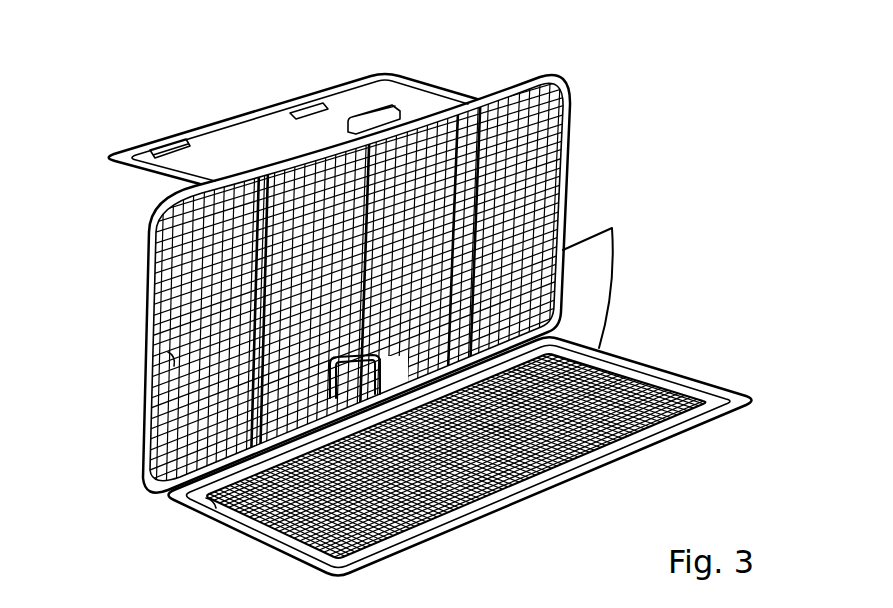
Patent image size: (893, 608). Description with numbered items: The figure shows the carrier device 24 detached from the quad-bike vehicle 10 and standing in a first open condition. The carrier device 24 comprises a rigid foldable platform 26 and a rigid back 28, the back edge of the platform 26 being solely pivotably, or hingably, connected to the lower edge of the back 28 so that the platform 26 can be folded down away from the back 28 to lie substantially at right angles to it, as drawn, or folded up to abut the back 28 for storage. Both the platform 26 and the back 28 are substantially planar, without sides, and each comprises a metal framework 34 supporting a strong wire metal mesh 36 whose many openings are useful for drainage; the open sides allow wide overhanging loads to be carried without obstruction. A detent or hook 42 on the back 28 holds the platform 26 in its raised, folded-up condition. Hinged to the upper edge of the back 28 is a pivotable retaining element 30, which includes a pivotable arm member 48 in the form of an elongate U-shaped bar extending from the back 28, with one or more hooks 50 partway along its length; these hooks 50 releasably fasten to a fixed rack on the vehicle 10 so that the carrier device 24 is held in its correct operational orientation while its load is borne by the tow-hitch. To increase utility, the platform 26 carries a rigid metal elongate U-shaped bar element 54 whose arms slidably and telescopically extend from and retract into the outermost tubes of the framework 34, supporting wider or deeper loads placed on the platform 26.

The quad-bike vehicle 10 is at (417, 305).
The carrier device 24 is at (464, 403).
The platform 26 is at (700, 370).
The back 28 is at (567, 157).
The retaining element 30 is at (309, 101).
The framework 34 is at (460, 213).
The mesh 36 is at (213, 503).
The hook 42 is at (373, 112).
The arm member 48 is at (240, 112).
The hooks 50 is at (168, 143).
The bar element 54 is at (523, 517).